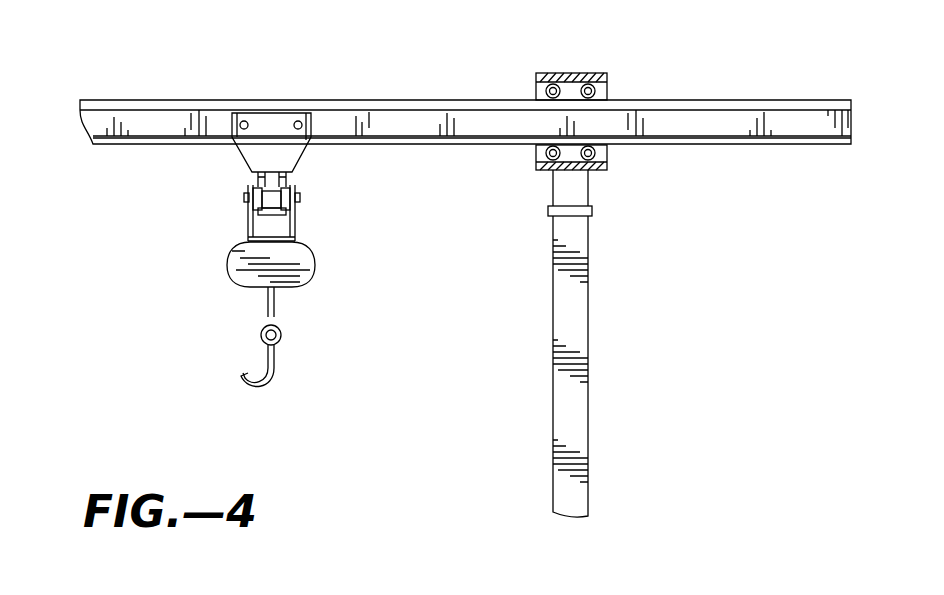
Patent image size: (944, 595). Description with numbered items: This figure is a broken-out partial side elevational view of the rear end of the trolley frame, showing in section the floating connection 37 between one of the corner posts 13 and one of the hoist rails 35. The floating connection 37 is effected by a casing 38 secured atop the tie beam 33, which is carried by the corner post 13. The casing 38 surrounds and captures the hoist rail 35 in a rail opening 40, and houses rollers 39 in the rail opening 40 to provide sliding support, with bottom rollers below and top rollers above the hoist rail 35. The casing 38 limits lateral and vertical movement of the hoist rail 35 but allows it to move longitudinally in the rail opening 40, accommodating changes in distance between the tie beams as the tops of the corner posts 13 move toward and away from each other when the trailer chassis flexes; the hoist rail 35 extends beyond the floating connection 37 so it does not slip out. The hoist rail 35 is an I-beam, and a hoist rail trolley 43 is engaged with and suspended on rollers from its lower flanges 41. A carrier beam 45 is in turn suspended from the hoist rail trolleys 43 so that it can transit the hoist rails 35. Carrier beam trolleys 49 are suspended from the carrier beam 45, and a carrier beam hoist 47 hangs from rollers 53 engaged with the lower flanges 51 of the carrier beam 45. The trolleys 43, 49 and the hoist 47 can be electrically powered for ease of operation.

The corner post 13 is at (588, 311).
The tie beam 33 is at (588, 191).
The hoist rail 35 is at (373, 100).
The floating connection 37 is at (571, 101).
The casing 38 is at (607, 93).
The roller 39 is at (536, 91).
The rail opening 40 is at (537, 148).
The lower flange 41 is at (430, 145).
The hoist rail trolley 43 is at (262, 150).
The carrier beam 45 is at (287, 181).
The carrier beam hoist 47 is at (315, 262).
The carrier beam trolley 49 is at (250, 222).
The lower flange 51 is at (278, 217).
The roller 53 is at (285, 201).